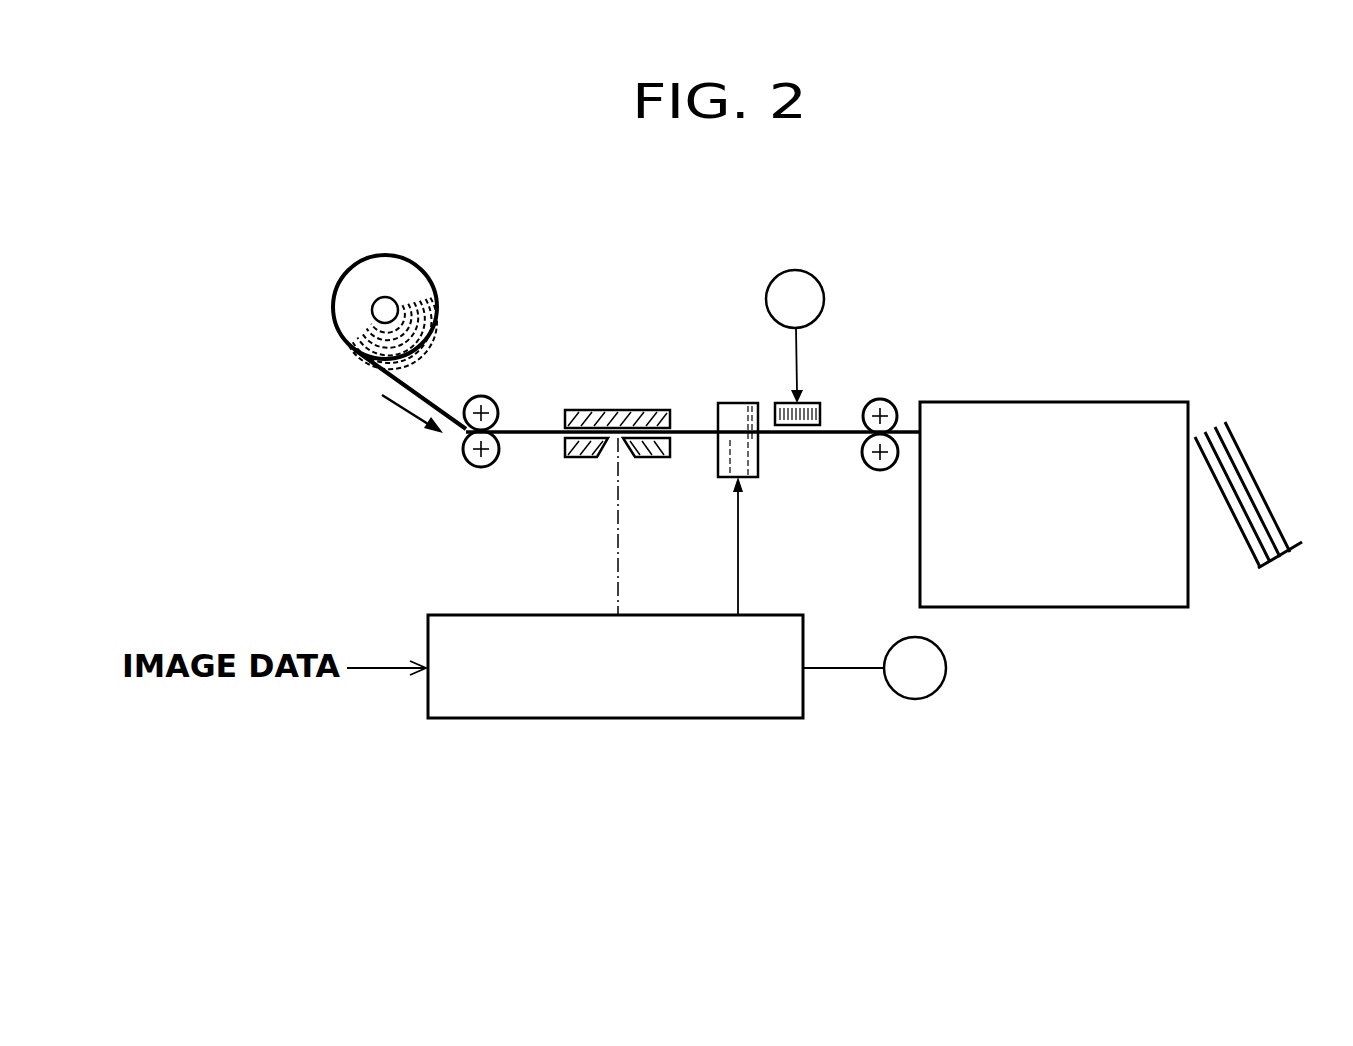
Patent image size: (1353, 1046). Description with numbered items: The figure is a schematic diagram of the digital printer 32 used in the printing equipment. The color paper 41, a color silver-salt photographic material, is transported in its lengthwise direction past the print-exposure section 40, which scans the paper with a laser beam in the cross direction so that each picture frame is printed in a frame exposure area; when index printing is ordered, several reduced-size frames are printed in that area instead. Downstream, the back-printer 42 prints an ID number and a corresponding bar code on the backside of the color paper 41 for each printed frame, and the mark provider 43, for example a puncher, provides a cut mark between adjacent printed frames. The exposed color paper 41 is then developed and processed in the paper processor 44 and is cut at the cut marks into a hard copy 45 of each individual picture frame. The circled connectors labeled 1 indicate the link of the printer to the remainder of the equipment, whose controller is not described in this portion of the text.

The controller 1 is at (856, 484).
The digital printer 32 is at (618, 300).
The print-exposure section 40 is at (620, 718).
The color paper 41 is at (528, 437).
The back-printer 42 is at (820, 402).
The mark provider 43 is at (743, 402).
The paper processor 44 is at (1063, 402).
The hard copy 45 is at (1263, 500).